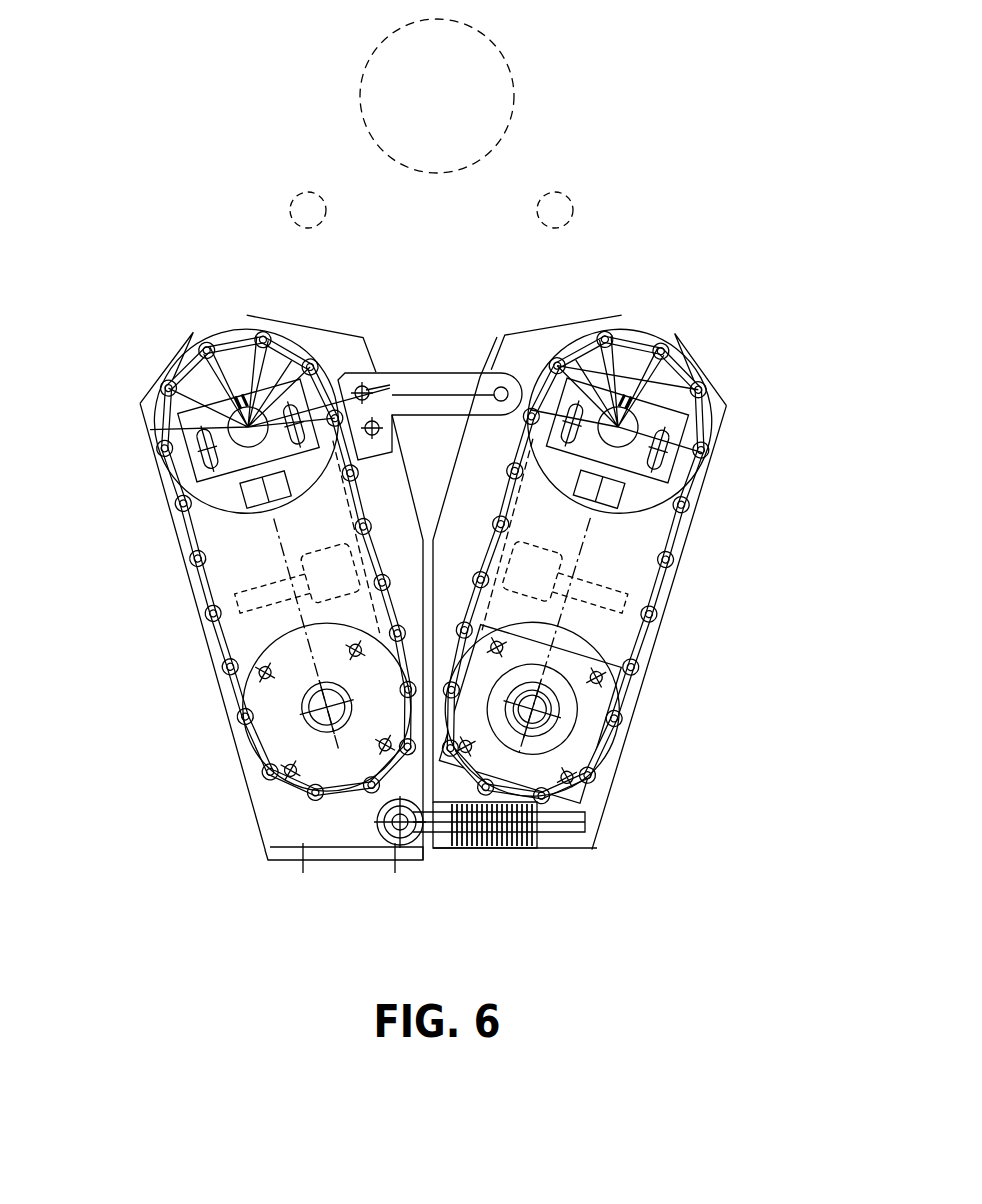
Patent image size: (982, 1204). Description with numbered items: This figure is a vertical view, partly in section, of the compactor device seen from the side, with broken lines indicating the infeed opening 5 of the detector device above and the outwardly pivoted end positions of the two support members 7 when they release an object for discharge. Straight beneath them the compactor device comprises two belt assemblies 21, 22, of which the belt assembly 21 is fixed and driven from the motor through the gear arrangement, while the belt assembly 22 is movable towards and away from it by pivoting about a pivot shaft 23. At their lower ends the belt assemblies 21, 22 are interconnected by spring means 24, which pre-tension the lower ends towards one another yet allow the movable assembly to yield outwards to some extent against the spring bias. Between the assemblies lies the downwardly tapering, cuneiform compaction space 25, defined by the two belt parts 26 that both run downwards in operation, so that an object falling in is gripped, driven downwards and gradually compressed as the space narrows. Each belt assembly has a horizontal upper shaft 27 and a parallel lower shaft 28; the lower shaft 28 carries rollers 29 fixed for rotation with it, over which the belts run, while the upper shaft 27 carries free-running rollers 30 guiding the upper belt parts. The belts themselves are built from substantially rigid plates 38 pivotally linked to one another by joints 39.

The infeed opening 5 is at (512, 108).
The support members 7 is at (297, 203).
The belt assembly 21 is at (200, 892).
The belt assembly 22 is at (672, 893).
The pivot shaft 23 is at (505, 380).
The spring means 24 is at (492, 849).
The compaction space 25 is at (448, 448).
The belt parts 26 is at (373, 486).
The upper shaft 27 is at (150, 430).
The lower shaft 28 is at (318, 710).
The rollers 29 is at (262, 697).
The free-running rollers 30 is at (192, 380).
The plates 38 is at (655, 642).
The joints 39 is at (640, 682).